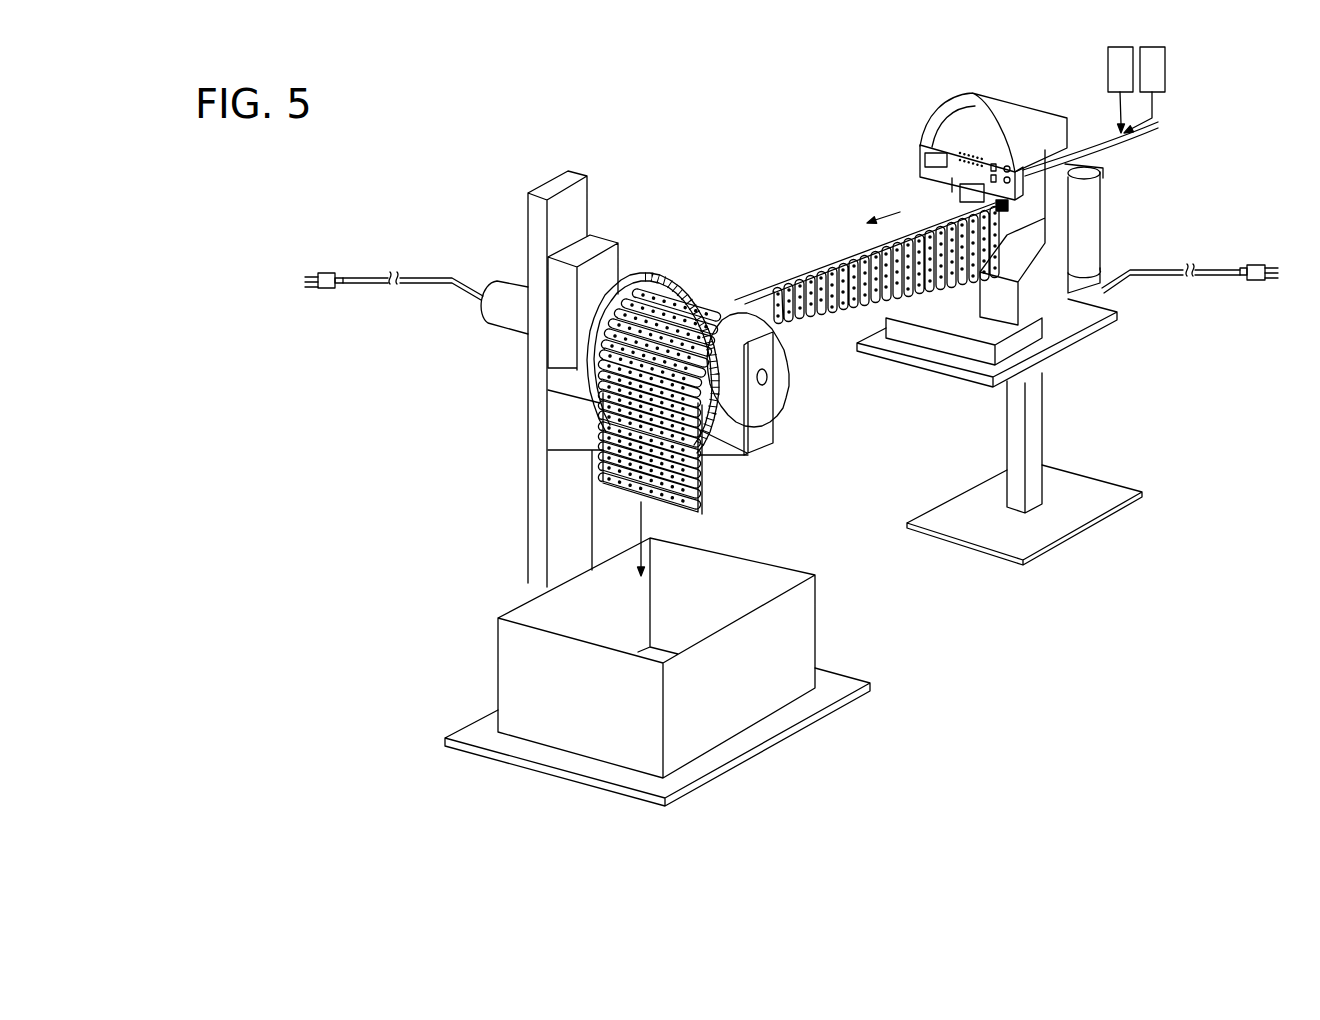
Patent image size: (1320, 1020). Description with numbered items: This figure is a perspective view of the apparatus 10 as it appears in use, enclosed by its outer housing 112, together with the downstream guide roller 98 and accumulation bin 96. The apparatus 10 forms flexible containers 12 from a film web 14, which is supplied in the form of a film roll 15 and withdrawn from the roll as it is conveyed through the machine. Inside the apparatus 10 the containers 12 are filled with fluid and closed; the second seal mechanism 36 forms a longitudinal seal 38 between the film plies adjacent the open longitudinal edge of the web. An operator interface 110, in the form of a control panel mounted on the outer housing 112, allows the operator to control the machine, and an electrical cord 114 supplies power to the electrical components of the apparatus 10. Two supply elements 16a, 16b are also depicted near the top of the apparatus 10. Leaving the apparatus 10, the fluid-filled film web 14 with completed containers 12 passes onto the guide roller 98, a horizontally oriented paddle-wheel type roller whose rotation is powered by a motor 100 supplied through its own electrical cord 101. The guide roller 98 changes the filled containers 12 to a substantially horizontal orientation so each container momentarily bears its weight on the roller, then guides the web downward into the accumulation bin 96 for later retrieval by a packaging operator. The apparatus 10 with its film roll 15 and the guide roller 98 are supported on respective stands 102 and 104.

The apparatus 10 is at (955, 178).
The flexible containers 12 is at (687, 283).
The film web 14 is at (838, 252).
The film roll 15 is at (1092, 223).
The reagent supply 16a is at (1108, 63).
The reagent supply 16b is at (1165, 66).
The second seal mechanism 36 is at (1010, 212).
The longitudinal seal 38 is at (927, 222).
The accumulation bin 96 is at (804, 619).
The guide roller 98 is at (757, 323).
The motor 100 is at (605, 267).
The electrical cord 101 is at (372, 278).
The stand 102 is at (1035, 418).
The stand 104 is at (538, 482).
The operator interface 110 is at (968, 165).
The outer housing 112 is at (965, 133).
The electrical cord 114 is at (1211, 268).